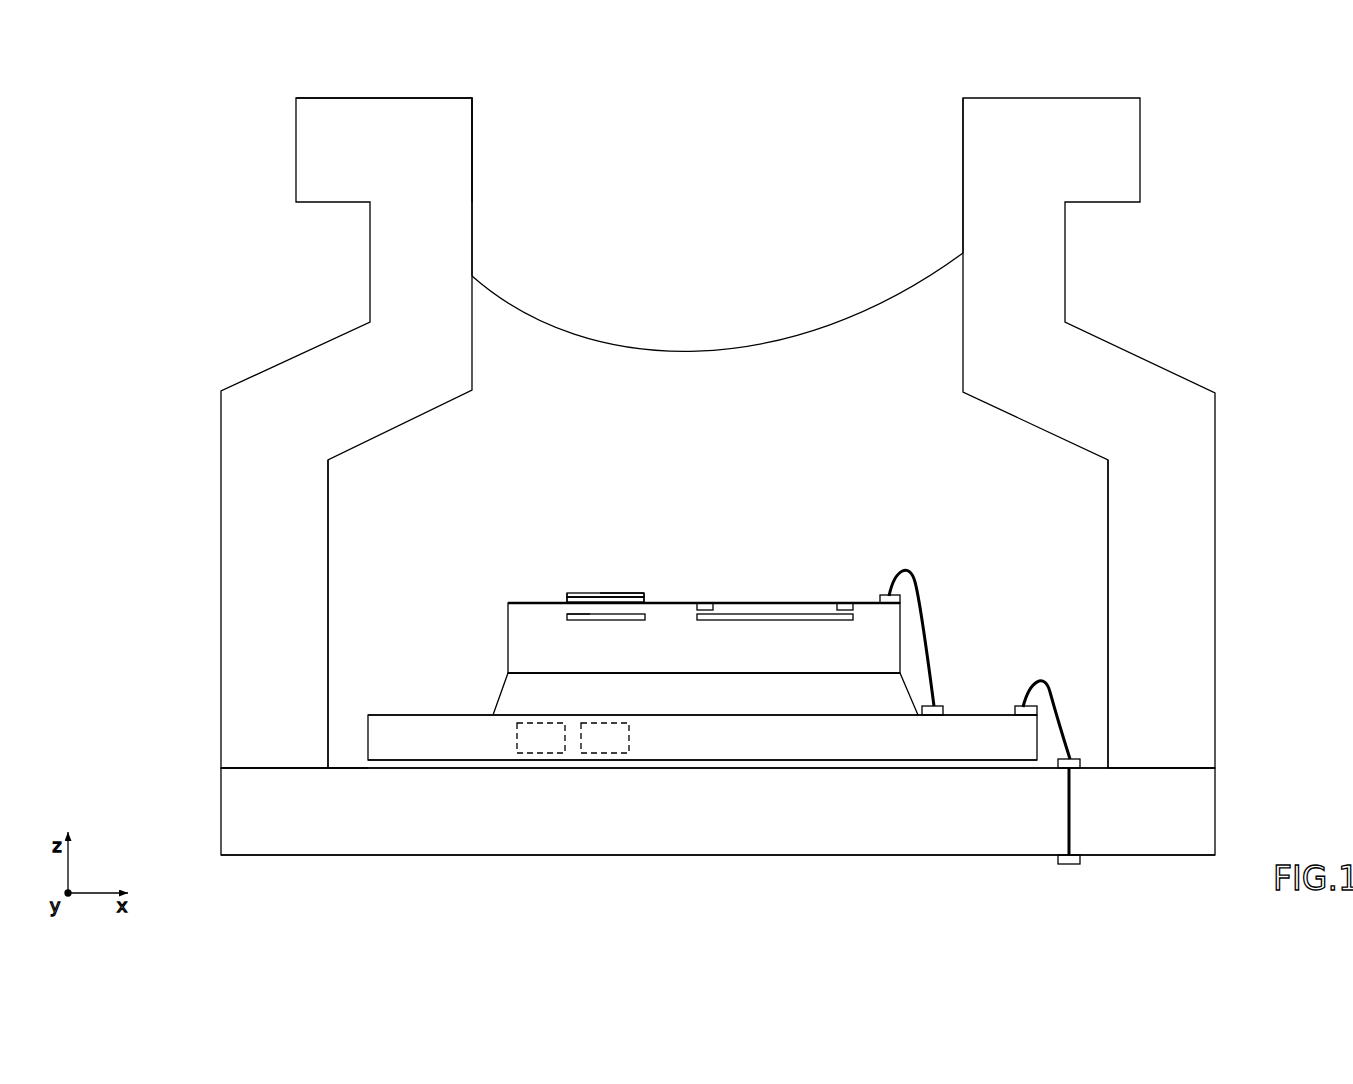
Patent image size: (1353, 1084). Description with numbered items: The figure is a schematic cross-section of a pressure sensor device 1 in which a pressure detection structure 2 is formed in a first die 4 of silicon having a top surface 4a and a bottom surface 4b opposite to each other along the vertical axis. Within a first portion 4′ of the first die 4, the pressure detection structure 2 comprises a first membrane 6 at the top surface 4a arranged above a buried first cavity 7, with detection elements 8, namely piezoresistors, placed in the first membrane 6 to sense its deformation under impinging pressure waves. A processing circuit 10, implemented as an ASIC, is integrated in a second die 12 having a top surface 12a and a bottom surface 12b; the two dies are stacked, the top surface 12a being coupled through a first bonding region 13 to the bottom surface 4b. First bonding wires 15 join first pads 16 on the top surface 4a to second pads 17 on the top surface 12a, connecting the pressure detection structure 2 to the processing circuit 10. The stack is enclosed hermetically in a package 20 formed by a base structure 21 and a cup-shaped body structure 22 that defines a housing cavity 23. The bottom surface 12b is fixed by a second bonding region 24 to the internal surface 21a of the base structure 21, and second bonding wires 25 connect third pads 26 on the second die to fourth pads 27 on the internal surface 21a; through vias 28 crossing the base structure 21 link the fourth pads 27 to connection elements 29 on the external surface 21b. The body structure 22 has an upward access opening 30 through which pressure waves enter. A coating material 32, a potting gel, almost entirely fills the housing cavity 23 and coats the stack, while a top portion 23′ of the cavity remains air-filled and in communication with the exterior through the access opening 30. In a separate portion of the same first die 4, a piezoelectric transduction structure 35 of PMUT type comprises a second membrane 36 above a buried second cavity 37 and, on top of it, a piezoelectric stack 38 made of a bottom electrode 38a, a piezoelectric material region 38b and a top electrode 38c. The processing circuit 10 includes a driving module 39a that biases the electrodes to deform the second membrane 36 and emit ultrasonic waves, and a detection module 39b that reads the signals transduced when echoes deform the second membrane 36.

The pressure sensor device 1 is at (722, 496).
The pressure detection structure 2 is at (842, 591).
The first die 4 is at (508, 641).
The top surface 4a is at (862, 599).
The bottom surface 4b is at (842, 677).
The first portion 4′ is at (779, 592).
The first membrane 6 is at (754, 604).
The first cavity 7 is at (742, 616).
The detection elements 8 is at (708, 605).
The processing circuit 10 is at (682, 742).
The second die 12 is at (375, 732).
The top surface 12a is at (405, 708).
The bottom surface 12b is at (412, 764).
The first bonding region 13 is at (502, 692).
The first bonding wires 15 is at (925, 605).
The first pads 16 is at (883, 594).
The second pads 17 is at (941, 705).
The package 20 is at (668, 491).
The base structure 21 is at (240, 797).
The internal surface 21a is at (263, 766).
The external surface 21b is at (262, 858).
The body structure 22 is at (258, 498).
The housing cavity 23 is at (332, 530).
The top portion 23′ is at (707, 238).
The second bonding region 24 is at (373, 765).
The second bonding wires 25 is at (1061, 701).
The third pads 26 is at (1018, 705).
The fourth pads 27 is at (1080, 762).
The through vias 28 is at (1067, 815).
The connection elements 29 is at (1068, 868).
The access opening 30 is at (478, 187).
The coating material 32 is at (850, 361).
The piezoelectric transduction structure 35 is at (617, 574).
The second membrane 36 is at (613, 615).
The second cavity 37 is at (577, 616).
The piezoelectric stack 38 is at (582, 578).
The bottom electrode 38a is at (567, 600).
The piezoelectric material region 38b is at (647, 600).
The top electrode 38c is at (565, 601).
The driving module 39a is at (540, 757).
The detection module 39b is at (604, 757).